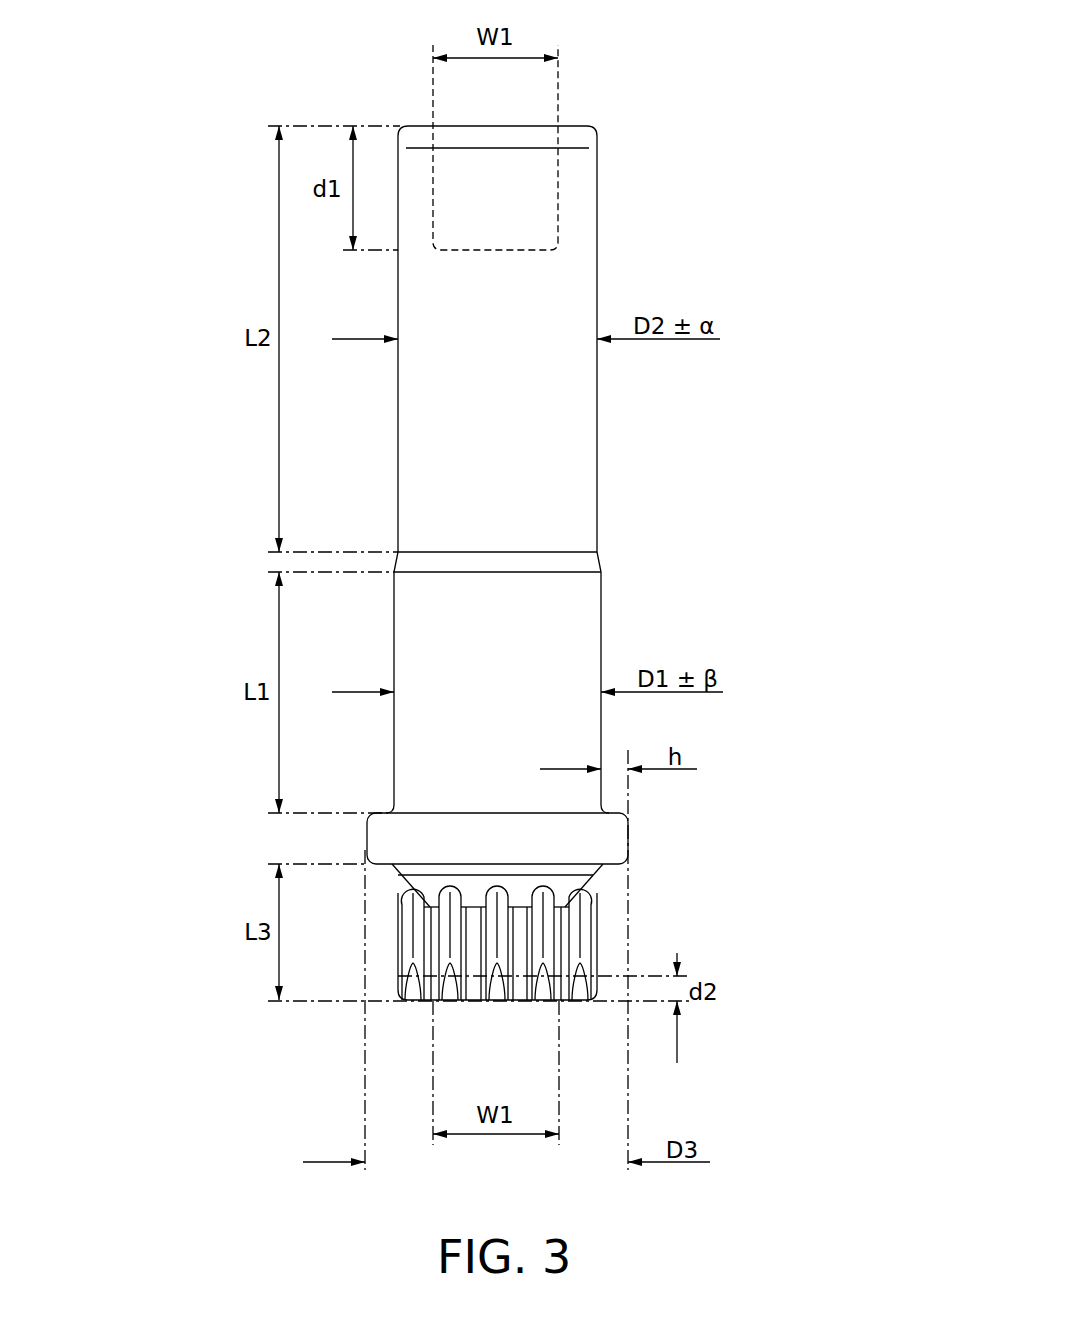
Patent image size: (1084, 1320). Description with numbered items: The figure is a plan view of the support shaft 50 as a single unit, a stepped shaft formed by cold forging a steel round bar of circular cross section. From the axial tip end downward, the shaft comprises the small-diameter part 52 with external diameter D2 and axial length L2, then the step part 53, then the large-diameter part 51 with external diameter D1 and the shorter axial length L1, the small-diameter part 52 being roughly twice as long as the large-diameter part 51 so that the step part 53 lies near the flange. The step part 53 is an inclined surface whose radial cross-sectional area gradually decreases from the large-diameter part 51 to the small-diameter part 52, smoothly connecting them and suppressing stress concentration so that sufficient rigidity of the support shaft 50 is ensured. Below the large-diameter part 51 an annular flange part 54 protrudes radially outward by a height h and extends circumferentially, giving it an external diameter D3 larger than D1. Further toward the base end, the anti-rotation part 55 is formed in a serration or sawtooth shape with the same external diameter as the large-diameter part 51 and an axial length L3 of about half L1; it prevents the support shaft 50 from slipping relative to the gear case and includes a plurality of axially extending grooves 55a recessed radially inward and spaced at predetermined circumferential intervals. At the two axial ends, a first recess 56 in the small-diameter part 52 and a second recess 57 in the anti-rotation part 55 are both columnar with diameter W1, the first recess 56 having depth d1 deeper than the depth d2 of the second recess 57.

The support shaft 50 is at (564, 571).
The large-diameter part 51 is at (484, 647).
The small-diameter part 52 is at (484, 455).
The step part 53 is at (558, 563).
The flange part 54 is at (585, 845).
The anti-rotation part 55 is at (493, 980).
The grooves 55a is at (432, 952).
The first recess 56 is at (440, 194).
The second recess 57 is at (478, 1012).